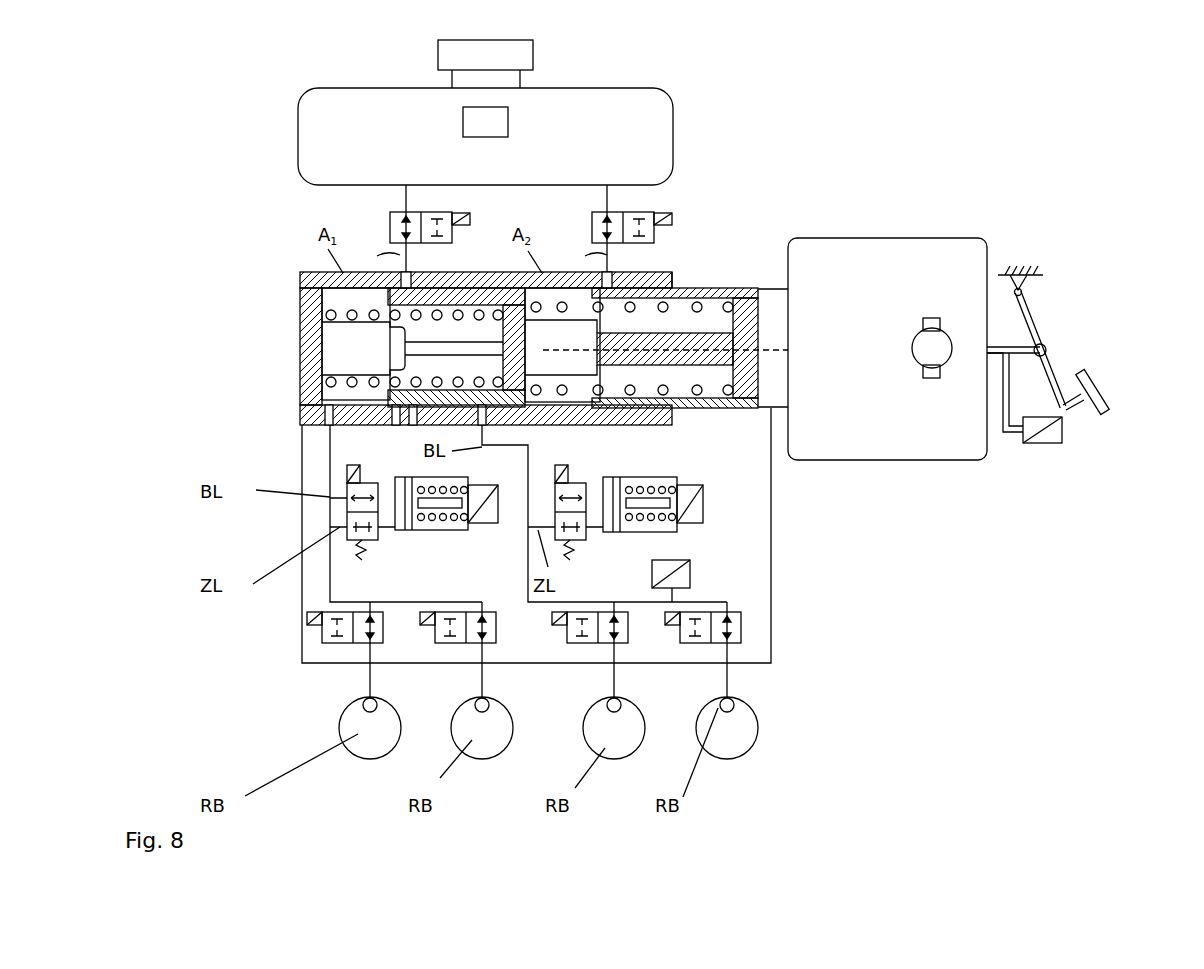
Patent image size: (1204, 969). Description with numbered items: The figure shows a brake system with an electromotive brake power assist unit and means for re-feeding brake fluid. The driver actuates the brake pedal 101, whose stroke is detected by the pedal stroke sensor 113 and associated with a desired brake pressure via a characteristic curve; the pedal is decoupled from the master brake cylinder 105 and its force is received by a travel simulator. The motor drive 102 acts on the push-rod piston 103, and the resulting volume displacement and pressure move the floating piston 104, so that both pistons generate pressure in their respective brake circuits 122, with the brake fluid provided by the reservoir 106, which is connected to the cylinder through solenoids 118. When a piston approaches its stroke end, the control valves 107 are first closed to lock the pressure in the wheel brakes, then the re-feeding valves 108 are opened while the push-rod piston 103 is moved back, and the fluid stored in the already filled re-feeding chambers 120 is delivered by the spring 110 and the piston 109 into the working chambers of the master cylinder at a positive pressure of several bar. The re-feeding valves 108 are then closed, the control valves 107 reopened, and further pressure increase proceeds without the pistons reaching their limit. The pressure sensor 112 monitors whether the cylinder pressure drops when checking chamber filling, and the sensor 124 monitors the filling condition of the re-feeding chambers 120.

The brake pedal 101 is at (1032, 315).
The brake power assist unit 102 is at (932, 270).
The push-rod piston 103 is at (727, 291).
The floating piston 104 is at (327, 400).
The master brake cylinder 105 is at (307, 320).
The reservoir 106 is at (325, 128).
The control valves 107 is at (735, 628).
The re-feeding valve 108 is at (347, 516).
The piston 109 is at (653, 525).
The spring 110 is at (729, 550).
The pressure sensor 112 is at (690, 575).
The pedal stroke sensor 113 is at (1062, 430).
The solenoid 118 is at (437, 211).
The re-feeding chamber 120 is at (397, 477).
The brake circuit 122 is at (365, 680).
The sensor 124 is at (703, 505).